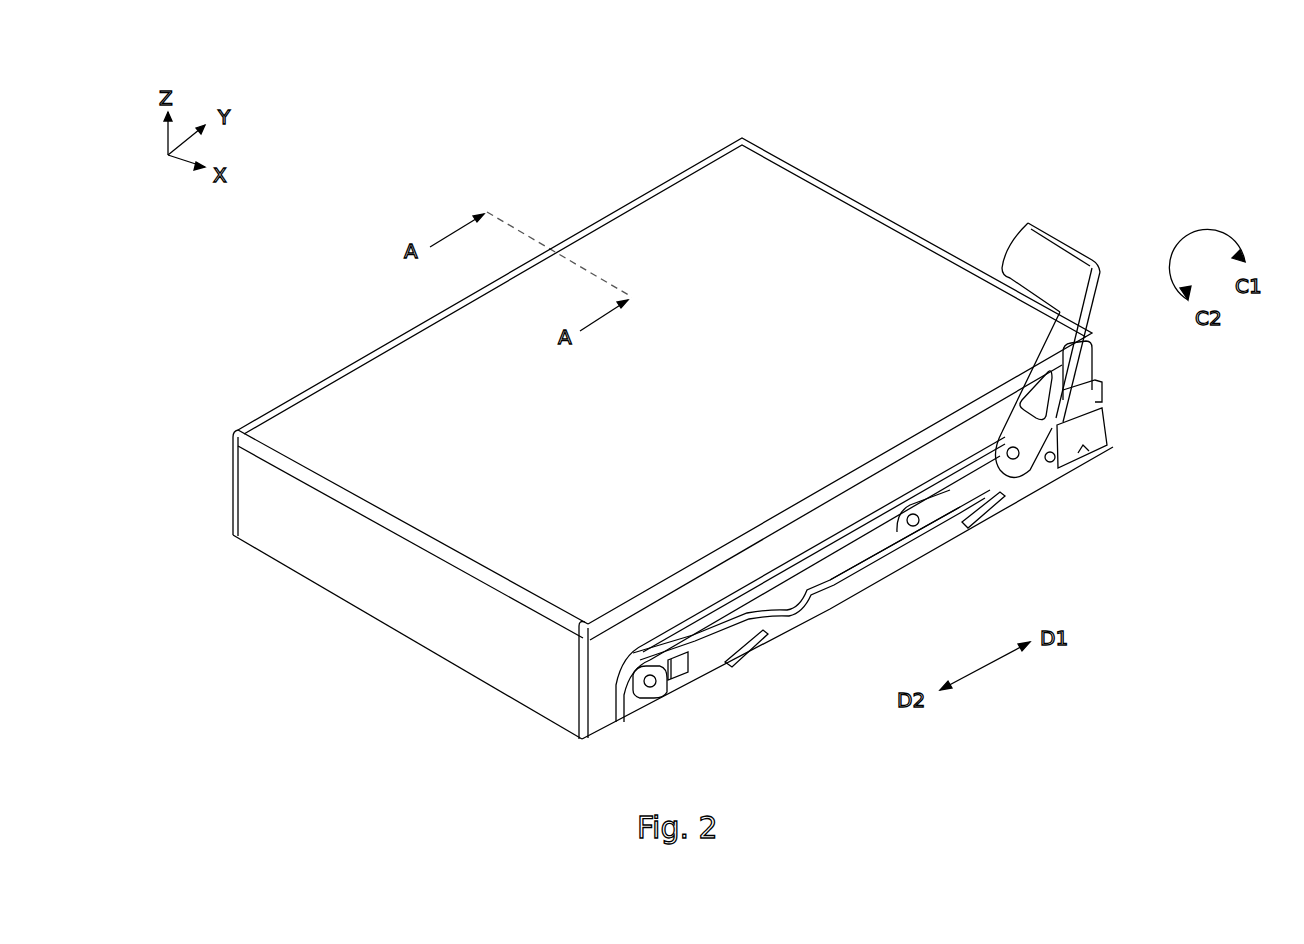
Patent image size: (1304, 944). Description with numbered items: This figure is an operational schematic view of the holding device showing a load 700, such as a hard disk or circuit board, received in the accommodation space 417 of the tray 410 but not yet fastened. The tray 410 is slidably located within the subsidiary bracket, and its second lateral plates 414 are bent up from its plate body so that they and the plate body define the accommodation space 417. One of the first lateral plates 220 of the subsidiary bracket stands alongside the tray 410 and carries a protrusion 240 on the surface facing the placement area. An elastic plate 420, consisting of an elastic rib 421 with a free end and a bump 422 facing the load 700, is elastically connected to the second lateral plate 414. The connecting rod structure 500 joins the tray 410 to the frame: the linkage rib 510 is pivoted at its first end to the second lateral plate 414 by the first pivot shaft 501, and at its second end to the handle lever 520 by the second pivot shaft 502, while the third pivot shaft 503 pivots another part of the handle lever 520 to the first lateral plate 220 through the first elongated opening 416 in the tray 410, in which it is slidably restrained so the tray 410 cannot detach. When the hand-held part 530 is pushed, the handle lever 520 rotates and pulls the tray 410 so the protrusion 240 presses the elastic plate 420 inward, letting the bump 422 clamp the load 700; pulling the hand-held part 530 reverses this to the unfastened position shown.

The load 700 is at (800, 186).
The accommodation space 417 is at (908, 490).
The connecting rod structure 500 is at (1040, 340).
The hand-held part 530 is at (1056, 267).
The handle lever 520 is at (1070, 350).
The first lateral plate 220 is at (1095, 438).
The third pivot shaft 503 is at (1053, 463).
The first elongated opening 416 is at (1045, 474).
The second pivot shaft 502 is at (1015, 465).
The linkage rib 510 is at (955, 495).
The first pivot shaft 501 is at (920, 527).
The second lateral plate 414 is at (845, 555).
The protrusion 240 is at (685, 660).
The bump 422 is at (660, 680).
The elastic rib 421 is at (645, 700).
The elastic plate 420 is at (752, 712).
The tray 410 is at (616, 670).